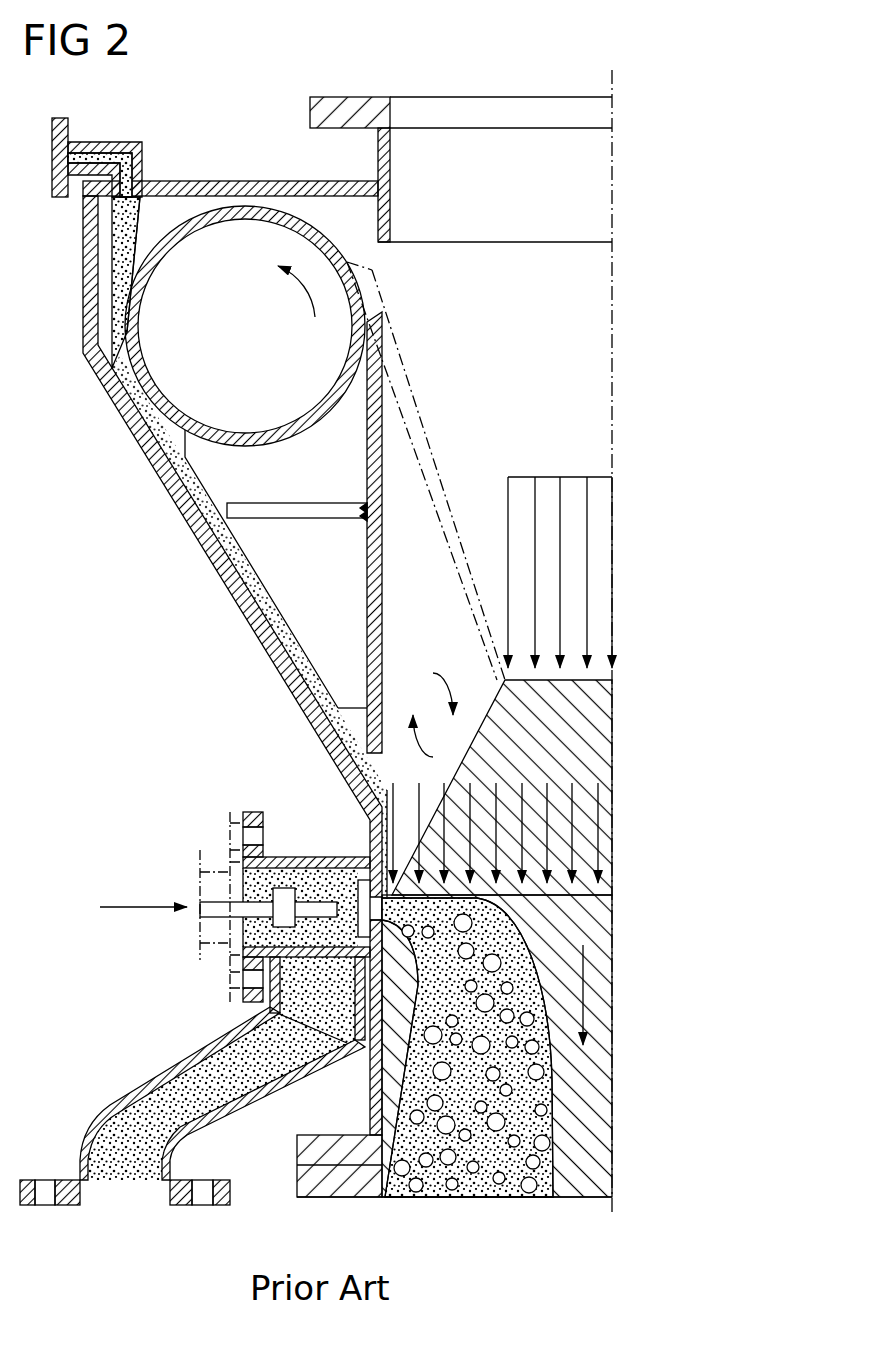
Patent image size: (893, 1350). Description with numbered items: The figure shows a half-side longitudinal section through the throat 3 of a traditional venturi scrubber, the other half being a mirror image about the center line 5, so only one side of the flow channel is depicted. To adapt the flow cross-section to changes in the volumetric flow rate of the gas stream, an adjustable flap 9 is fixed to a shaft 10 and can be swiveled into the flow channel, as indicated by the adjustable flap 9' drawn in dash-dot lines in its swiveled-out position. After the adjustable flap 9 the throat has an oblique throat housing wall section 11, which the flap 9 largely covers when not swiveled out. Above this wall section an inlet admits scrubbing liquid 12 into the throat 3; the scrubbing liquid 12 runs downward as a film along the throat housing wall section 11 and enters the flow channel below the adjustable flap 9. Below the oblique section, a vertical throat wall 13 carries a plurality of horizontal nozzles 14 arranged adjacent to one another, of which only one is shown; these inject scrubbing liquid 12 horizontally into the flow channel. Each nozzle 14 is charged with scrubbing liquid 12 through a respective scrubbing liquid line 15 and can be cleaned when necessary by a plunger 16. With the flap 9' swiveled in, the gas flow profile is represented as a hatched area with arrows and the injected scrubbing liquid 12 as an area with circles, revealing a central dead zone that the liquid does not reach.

The throat 3 is at (672, 122).
The center line 5 is at (613, 292).
The adjustable flap 9 is at (304, 532).
The adjustable flap in swiveled-out position 9' is at (426, 471).
The shaft 10 is at (248, 424).
The oblique throat housing wall section 11 is at (202, 545).
The scrubbing liquid 12 is at (128, 258).
The vertical throat wall 13 is at (370, 840).
The horizontal nozzle 14 is at (353, 903).
The scrubbing liquid line 15 is at (170, 1073).
The plunger 16 is at (217, 907).